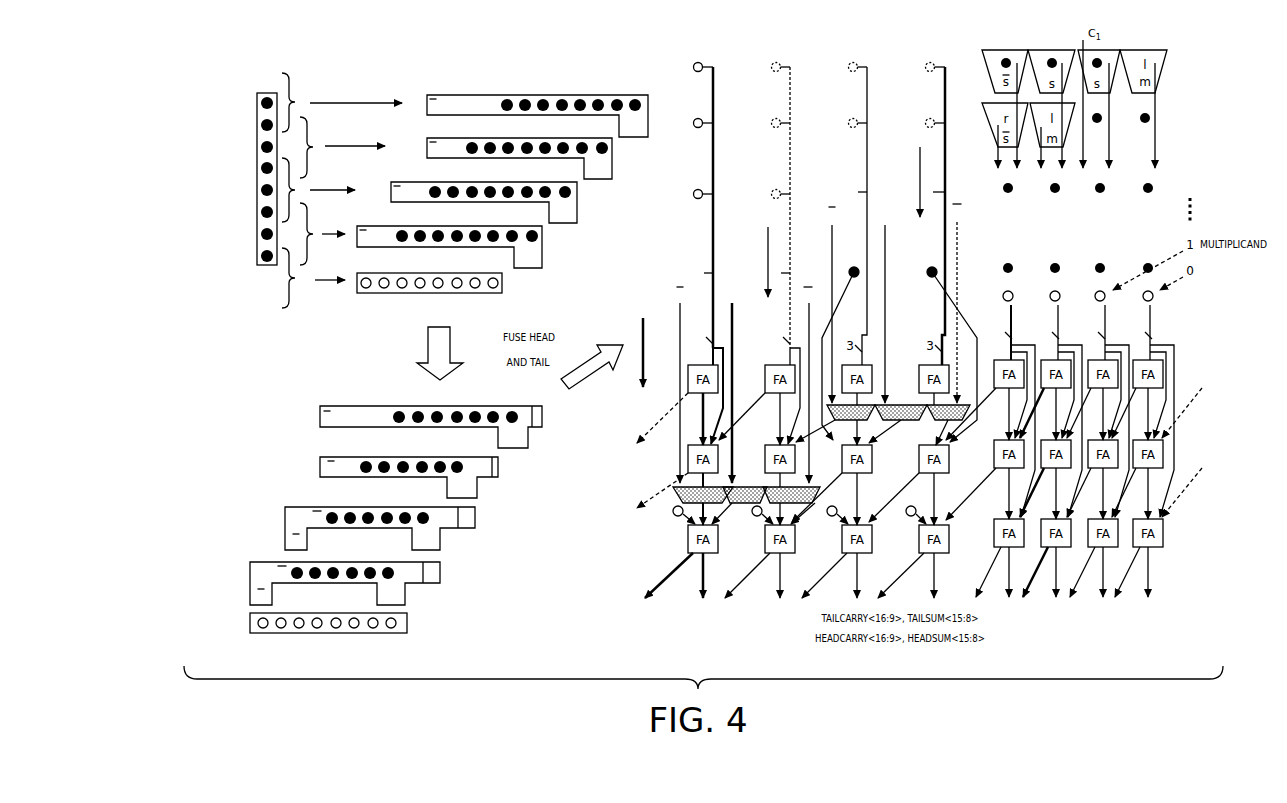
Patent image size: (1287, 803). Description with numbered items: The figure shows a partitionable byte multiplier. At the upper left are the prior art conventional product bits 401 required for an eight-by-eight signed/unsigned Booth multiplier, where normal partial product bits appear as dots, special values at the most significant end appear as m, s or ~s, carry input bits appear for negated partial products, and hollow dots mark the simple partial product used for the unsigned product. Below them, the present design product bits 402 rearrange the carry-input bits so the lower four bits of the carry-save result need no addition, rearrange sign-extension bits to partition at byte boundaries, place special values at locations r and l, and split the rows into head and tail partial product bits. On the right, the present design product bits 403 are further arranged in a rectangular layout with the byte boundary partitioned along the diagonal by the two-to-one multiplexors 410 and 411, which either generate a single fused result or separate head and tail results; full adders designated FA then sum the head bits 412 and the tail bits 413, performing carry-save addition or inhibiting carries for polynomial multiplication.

The prior art conventional product bits 401 is at (586, 287).
The present design product bits 402 is at (543, 501).
The present design product bits 403 is at (883, 165).
The 2:1 multiplexor 410 is at (885, 445).
The 2:1 multiplexor 411 is at (742, 471).
The head bits 412 is at (742, 357).
The tail bits 413 is at (1053, 632).